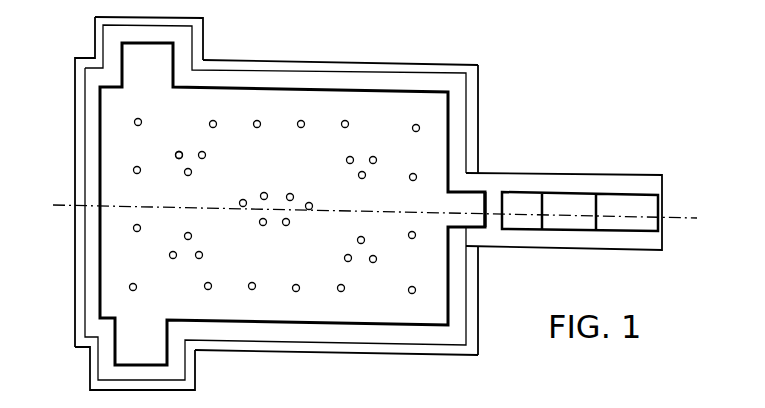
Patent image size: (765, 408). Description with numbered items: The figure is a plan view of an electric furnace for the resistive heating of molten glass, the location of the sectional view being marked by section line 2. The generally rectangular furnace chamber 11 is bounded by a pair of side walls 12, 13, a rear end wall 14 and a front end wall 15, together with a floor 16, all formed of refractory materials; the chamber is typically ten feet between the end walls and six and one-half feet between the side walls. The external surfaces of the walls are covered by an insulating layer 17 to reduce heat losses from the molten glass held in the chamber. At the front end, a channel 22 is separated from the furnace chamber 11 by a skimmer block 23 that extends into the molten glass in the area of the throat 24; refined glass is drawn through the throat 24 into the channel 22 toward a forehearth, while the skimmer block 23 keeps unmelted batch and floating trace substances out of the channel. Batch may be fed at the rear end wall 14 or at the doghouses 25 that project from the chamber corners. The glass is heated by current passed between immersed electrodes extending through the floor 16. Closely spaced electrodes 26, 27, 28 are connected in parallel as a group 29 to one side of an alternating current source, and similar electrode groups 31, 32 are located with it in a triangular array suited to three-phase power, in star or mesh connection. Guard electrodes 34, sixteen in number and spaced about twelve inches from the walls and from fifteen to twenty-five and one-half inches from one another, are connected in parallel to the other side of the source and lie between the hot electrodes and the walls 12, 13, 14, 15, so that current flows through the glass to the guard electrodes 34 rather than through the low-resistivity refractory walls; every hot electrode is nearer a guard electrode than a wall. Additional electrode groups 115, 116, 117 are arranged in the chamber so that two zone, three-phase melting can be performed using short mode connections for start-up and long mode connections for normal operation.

The section line 2- 2 is at (53, 205).
The furnace chamber 11 is at (305, 46).
The side wall 12 is at (232, 75).
The side wall 13 is at (303, 332).
The rear end wall 14 is at (88, 107).
The front end wall 15 is at (457, 130).
The floor 16 is at (377, 100).
The insulating layer 17 is at (80, 130).
The channel 22 is at (595, 169).
The skimmer block 23 is at (491, 211).
The throat 24 is at (467, 222).
The doghouses 25 is at (157, 63).
The electrode 26 is at (176, 153).
The electrode 27 is at (193, 172).
The electrode 28 is at (206, 152).
The electrode group 29 is at (183, 162).
The electrode group 31 is at (183, 249).
The electrode group 32 is at (256, 207).
The guard electrodes 34 is at (138, 118).
The electrode group 115 is at (293, 211).
The electrode group 116 is at (356, 167).
The electrode group 117 is at (368, 247).